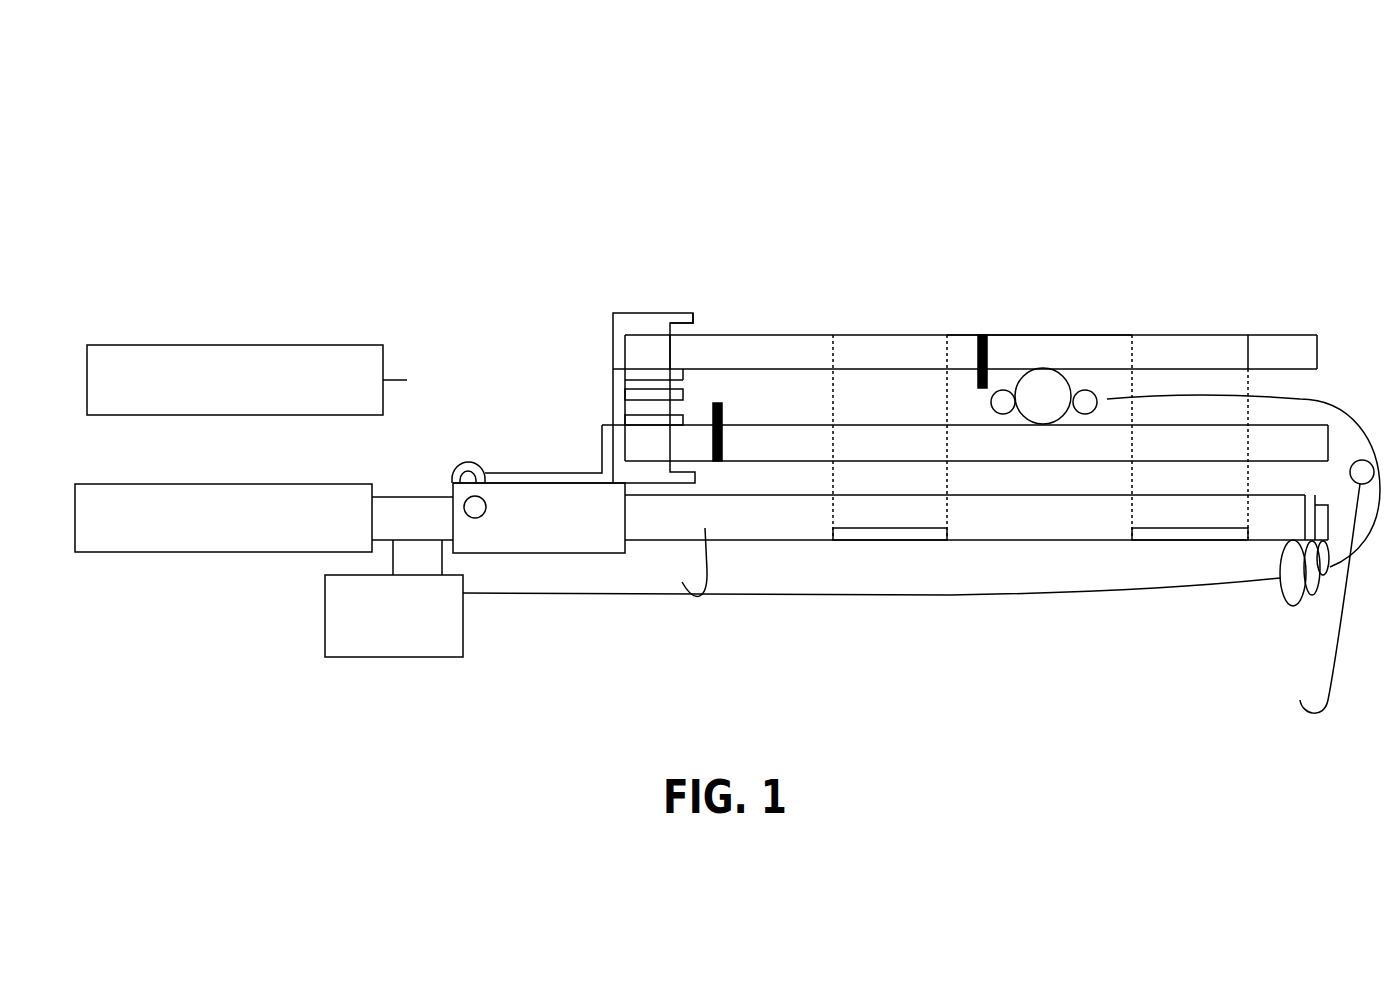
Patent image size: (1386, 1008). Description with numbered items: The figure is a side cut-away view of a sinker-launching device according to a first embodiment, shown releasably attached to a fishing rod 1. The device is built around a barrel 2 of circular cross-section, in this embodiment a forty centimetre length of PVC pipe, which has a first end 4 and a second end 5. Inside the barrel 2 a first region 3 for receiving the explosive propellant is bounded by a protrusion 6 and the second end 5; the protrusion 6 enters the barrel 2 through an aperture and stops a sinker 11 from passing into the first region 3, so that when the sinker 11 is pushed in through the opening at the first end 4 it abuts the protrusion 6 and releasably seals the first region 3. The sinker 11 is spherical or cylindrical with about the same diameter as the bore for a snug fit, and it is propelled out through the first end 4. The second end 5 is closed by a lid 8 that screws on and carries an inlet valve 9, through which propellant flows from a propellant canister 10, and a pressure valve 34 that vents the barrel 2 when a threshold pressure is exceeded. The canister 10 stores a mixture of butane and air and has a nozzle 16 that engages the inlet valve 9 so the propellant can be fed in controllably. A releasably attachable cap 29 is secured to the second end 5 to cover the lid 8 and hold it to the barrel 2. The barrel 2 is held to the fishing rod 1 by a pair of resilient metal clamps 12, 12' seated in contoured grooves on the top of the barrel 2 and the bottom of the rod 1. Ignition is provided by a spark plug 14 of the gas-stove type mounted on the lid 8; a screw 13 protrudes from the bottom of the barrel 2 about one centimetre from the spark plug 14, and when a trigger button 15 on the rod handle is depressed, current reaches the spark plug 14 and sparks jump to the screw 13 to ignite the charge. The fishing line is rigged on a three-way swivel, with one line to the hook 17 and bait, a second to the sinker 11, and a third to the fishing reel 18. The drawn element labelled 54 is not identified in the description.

The fishing rod 1 is at (233, 553).
The barrel 2 is at (1063, 358).
The first region 3 is at (798, 390).
The first end 4 is at (1294, 398).
The second end 5 is at (549, 329).
The protrusion 6 is at (987, 335).
The lid 8 is at (637, 347).
The inlet valve 9 is at (660, 365).
The propellant canister 10 is at (333, 345).
The sinker 11 is at (1042, 418).
The resilient metal clamp 12 is at (890, 365).
The resilient metal clamp 12' is at (1197, 371).
The screw 13 is at (717, 403).
The spark plug 14 is at (649, 425).
The trigger button 15 is at (462, 463).
The nozzle 16 is at (407, 368).
The hook 17 is at (1330, 642).
The fishing reel 18 is at (383, 665).
The cap 29 is at (672, 313).
The pressure valve 34 is at (625, 400).
The lumen tube 54 is at (707, 570).